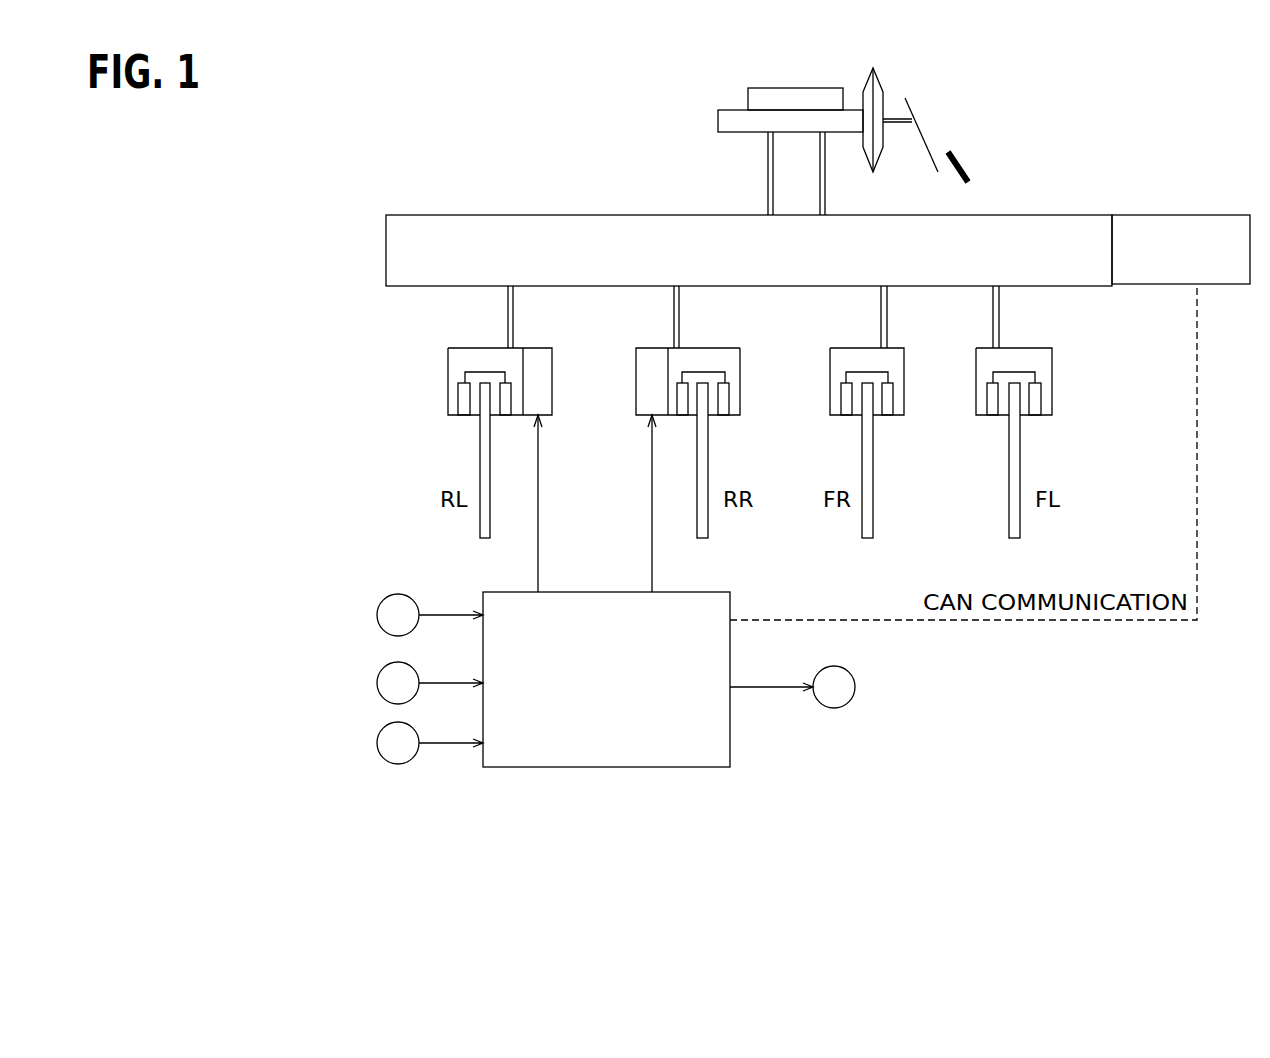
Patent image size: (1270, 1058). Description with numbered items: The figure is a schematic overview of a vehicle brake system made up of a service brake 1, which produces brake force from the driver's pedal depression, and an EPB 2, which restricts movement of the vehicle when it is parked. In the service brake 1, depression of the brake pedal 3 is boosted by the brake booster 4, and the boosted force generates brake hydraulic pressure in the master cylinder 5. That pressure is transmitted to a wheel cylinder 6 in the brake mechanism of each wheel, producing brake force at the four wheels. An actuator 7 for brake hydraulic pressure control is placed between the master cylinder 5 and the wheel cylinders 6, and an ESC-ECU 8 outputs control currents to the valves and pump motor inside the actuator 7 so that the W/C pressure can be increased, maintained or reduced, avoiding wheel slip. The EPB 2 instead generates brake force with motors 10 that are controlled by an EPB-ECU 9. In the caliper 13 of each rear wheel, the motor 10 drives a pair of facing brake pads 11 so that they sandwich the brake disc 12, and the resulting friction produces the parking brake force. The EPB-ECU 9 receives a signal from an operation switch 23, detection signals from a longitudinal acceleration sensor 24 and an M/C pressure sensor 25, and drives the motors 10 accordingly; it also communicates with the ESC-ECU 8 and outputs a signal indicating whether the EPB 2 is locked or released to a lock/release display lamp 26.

The service brake 1 is at (942, 101).
The EPB 2 is at (560, 461).
The brake pedal 3 is at (957, 155).
The brake booster 4 is at (880, 83).
The master cylinder 5 is at (733, 110).
The wheel cylinder 6 is at (515, 347).
The actuator 7 is at (1072, 213).
The ESC-ECU 8 is at (1225, 213).
The EPB-ECU 9 is at (702, 768).
The motor 10 is at (553, 370).
The brake pads 11 is at (463, 420).
The brake disc 12 is at (480, 473).
The caliper 13 is at (452, 348).
The operation switch 23 is at (380, 671).
The longitudinal acceleration sensor 24 is at (380, 603).
The M/C pressure sensor 25 is at (380, 729).
The lock/release display lamp 26 is at (840, 667).